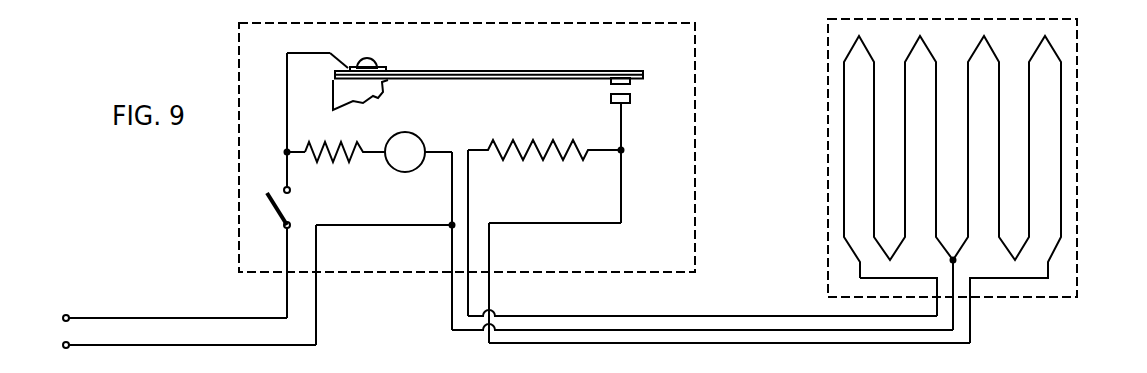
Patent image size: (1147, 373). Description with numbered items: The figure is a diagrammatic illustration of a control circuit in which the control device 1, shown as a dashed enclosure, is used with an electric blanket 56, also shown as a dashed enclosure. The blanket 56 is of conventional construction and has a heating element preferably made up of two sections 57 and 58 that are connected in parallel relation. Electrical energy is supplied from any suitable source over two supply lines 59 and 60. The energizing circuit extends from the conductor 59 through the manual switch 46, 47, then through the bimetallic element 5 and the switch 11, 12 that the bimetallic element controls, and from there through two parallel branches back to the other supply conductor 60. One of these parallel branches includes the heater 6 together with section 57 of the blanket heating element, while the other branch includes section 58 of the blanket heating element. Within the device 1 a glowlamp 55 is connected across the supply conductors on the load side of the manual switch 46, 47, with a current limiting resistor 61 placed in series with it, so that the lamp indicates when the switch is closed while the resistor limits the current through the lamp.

The control device 1 is at (695, 165).
The bimetallic element 5 is at (458, 72).
The heater 6 is at (562, 148).
The switch contact 11 is at (629, 82).
The switch contact 12 is at (629, 101).
The manual switch contact 46 is at (292, 190).
The manual switch blade 47 is at (283, 210).
The glowlamp 55 is at (410, 148).
The electric blanket 56 is at (1125, 127).
The heating element section 57 is at (873, 167).
The heating element section 58 is at (1030, 97).
The supply line 59 is at (156, 319).
The supply line 60 is at (197, 346).
The current limiting resistor 61 is at (352, 148).